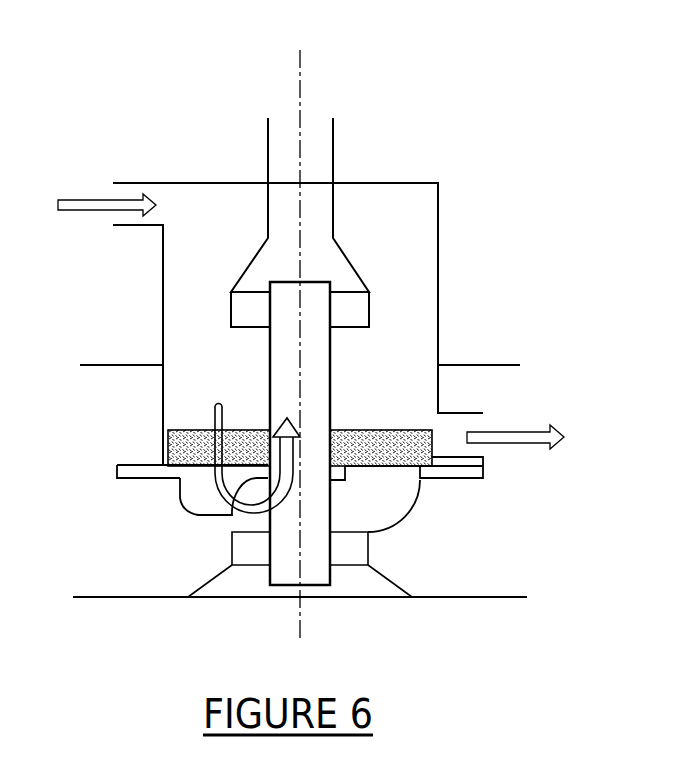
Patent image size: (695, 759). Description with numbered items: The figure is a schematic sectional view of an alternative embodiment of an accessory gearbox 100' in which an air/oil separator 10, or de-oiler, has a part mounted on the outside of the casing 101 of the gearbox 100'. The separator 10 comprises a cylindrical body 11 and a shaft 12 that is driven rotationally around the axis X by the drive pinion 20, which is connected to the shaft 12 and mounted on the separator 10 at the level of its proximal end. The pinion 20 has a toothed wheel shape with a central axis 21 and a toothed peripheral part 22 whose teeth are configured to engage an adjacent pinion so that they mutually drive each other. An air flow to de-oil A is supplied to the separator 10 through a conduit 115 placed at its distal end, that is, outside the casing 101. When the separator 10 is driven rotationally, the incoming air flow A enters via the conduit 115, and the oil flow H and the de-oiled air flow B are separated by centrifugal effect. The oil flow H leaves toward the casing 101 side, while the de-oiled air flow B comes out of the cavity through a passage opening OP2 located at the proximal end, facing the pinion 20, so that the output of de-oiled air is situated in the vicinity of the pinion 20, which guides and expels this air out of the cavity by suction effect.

The gearbox 100' is at (328, 338).
The air/oil separator 10 is at (438, 183).
The cylindrical body 11 is at (195, 183).
The conduit 115 is at (113, 183).
The casing 101 is at (500, 365).
The shaft 12 is at (270, 360).
The pinion 20 is at (473, 478).
The central axis 21 is at (140, 480).
The toothed peripheral part 22 is at (232, 532).
The passage opening OP2 is at (389, 472).